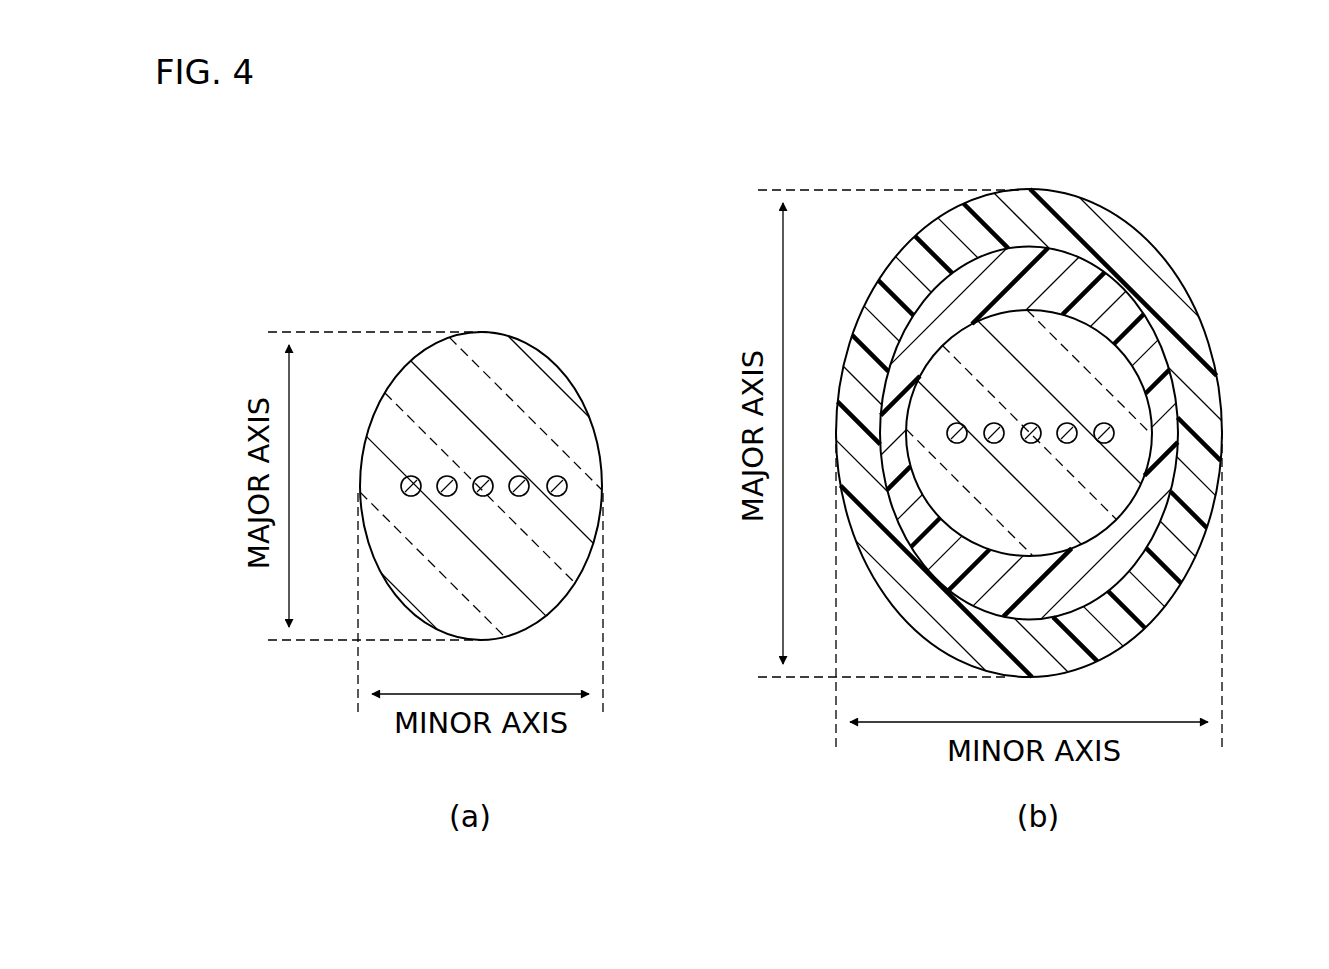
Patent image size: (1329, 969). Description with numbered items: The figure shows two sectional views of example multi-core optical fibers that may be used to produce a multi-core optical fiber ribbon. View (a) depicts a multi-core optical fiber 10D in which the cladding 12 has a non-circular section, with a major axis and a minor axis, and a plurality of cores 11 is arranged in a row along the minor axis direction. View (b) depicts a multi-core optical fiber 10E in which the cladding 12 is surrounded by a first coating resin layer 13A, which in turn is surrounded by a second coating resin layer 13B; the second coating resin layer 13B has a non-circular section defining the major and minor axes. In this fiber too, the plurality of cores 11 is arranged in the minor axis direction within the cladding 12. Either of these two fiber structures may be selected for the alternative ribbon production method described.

The multi-core optical fiber 10D is at (516, 274).
The multi-core optical fiber 10E is at (1091, 170).
The cores 11 is at (410, 477).
The cladding 12 is at (550, 393).
The first coating resin layer 13A is at (1127, 308).
The second coating resin layer 13B is at (1110, 242).